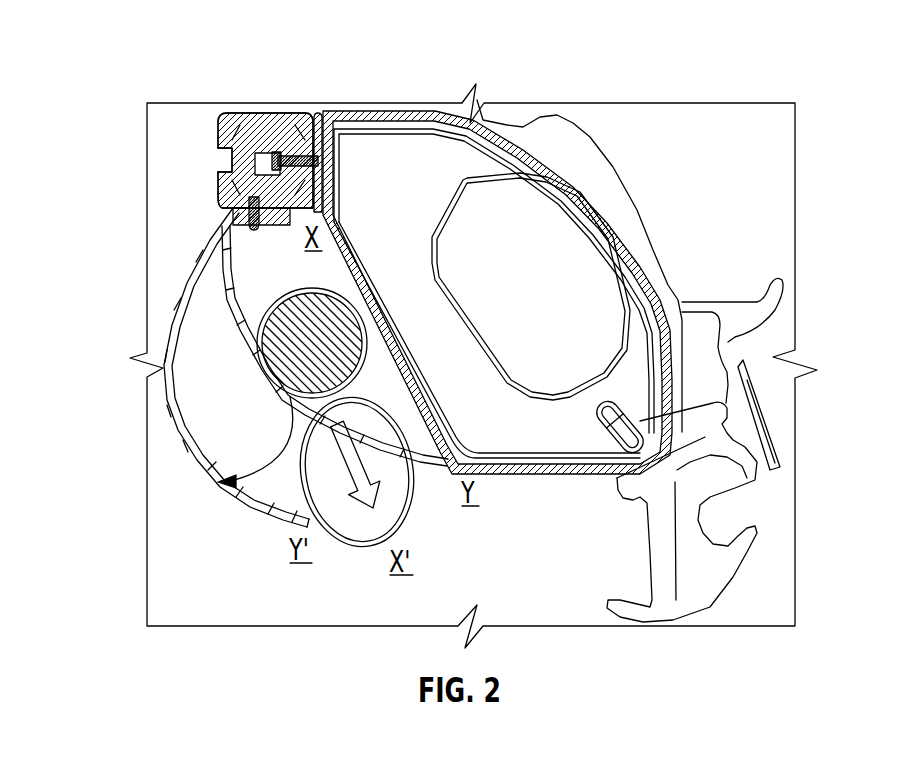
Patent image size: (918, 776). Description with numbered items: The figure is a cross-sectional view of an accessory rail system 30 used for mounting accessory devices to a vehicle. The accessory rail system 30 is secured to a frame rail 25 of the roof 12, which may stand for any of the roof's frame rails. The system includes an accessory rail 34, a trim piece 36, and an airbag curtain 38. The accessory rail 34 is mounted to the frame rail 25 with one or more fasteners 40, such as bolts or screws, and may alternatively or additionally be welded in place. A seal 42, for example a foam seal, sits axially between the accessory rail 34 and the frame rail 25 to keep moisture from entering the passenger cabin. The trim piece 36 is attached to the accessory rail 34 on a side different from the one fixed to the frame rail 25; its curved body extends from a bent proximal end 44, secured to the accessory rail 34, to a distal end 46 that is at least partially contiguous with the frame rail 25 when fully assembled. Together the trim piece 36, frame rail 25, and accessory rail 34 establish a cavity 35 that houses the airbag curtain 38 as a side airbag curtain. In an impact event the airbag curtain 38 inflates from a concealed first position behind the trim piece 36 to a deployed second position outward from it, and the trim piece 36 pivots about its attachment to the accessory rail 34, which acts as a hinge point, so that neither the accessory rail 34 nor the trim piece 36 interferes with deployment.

The roof 12 is at (590, 133).
The frame rail 25 is at (358, 108).
The accessory rail system 30 is at (118, 134).
The accessory rail 34 is at (225, 112).
The cavity 35 is at (253, 307).
The trim piece 36 is at (232, 297).
The airbag curtain 38 is at (327, 366).
The fasteners 40 is at (285, 150).
The seal 42 is at (318, 110).
The bent proximal end 44 is at (240, 226).
The distal end 46 is at (417, 468).